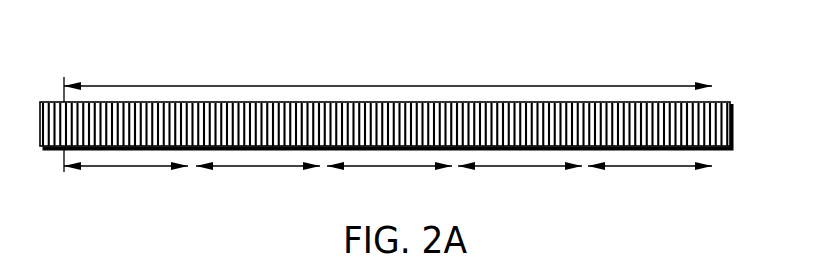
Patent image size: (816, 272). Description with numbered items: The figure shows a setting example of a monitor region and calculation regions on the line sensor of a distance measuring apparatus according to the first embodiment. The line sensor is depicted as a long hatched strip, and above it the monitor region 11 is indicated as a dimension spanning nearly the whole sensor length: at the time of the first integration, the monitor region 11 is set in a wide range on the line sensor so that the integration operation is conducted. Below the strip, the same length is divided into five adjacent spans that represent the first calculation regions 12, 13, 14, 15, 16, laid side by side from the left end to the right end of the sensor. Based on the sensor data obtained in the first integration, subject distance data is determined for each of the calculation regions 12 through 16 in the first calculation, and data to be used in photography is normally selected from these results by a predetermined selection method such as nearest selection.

The monitor region 11 is at (390, 85).
The first calculation region 12 is at (125, 168).
The first calculation region 13 is at (258, 168).
The first calculation region 14 is at (392, 168).
The first calculation region 15 is at (517, 168).
The first calculation region 16 is at (645, 168).